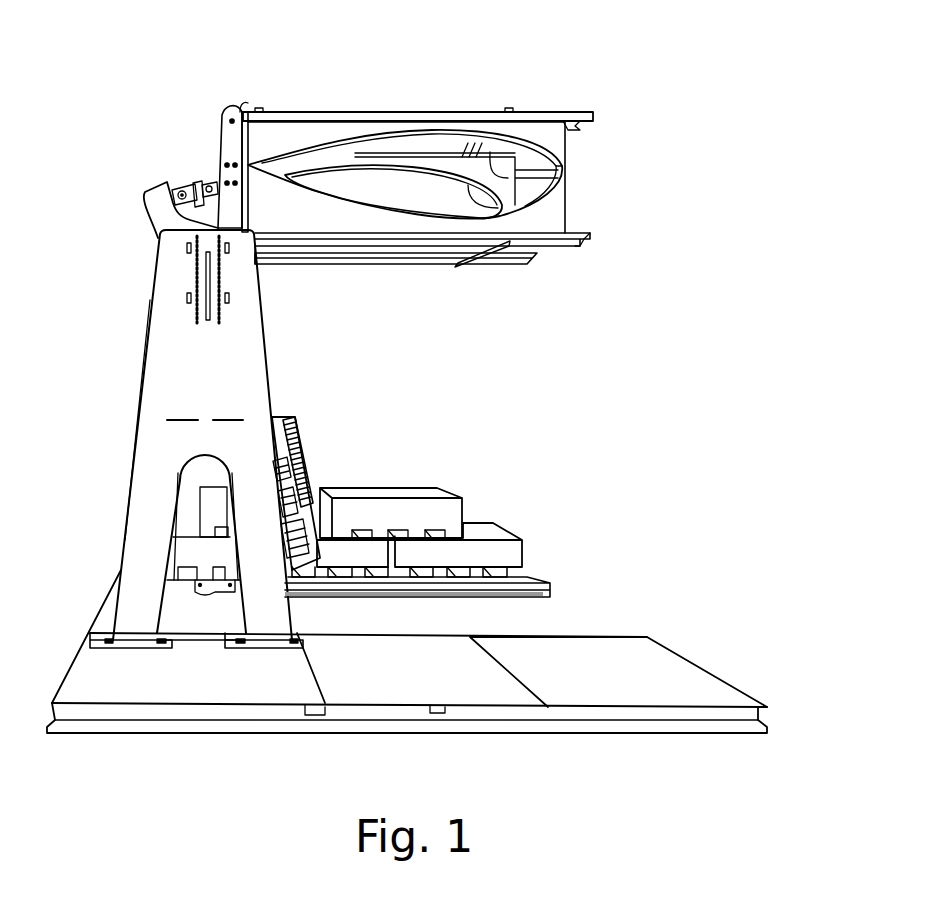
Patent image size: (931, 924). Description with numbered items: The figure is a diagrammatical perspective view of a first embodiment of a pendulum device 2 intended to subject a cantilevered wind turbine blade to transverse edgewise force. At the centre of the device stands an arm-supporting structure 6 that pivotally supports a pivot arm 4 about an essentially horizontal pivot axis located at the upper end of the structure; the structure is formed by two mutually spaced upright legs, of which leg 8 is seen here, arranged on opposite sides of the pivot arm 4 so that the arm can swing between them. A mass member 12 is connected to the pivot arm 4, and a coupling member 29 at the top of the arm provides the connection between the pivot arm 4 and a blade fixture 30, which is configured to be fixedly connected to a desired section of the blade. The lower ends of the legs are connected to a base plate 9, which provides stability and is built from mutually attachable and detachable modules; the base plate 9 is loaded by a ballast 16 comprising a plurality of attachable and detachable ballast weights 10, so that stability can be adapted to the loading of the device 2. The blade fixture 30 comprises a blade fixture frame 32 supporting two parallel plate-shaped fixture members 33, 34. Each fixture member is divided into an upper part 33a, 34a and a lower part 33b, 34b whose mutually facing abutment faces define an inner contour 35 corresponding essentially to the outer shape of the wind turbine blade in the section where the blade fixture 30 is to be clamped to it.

The pendulum device 2 is at (118, 398).
The pivot arm 4 is at (300, 487).
The arm-supporting structure 6 is at (150, 413).
The upright leg 8 is at (235, 378).
The base plate 9 is at (595, 655).
The ballast weight 10 is at (410, 493).
The mass member 12 is at (302, 455).
The ballast 16 is at (480, 523).
The coupling member 29 is at (197, 182).
The blade fixture 30 is at (379, 100).
The blade fixture frame 32 is at (527, 117).
The fixture member 33 is at (447, 167).
The upper fixture part 33a is at (343, 170).
The lower fixture part 33b is at (380, 245).
The fixture member 34 is at (557, 207).
The upper fixture part 34a is at (283, 132).
The lower fixture part 34b is at (310, 220).
The inner contour 35 is at (493, 208).